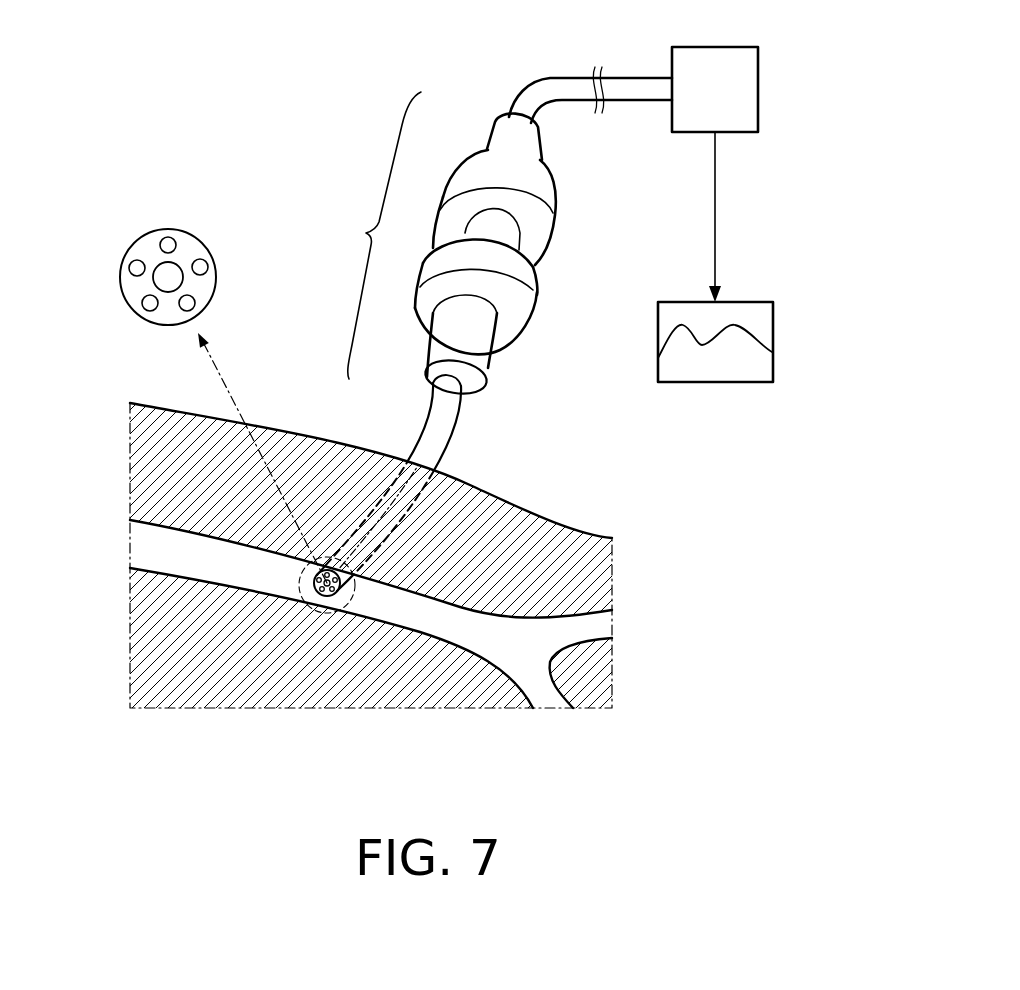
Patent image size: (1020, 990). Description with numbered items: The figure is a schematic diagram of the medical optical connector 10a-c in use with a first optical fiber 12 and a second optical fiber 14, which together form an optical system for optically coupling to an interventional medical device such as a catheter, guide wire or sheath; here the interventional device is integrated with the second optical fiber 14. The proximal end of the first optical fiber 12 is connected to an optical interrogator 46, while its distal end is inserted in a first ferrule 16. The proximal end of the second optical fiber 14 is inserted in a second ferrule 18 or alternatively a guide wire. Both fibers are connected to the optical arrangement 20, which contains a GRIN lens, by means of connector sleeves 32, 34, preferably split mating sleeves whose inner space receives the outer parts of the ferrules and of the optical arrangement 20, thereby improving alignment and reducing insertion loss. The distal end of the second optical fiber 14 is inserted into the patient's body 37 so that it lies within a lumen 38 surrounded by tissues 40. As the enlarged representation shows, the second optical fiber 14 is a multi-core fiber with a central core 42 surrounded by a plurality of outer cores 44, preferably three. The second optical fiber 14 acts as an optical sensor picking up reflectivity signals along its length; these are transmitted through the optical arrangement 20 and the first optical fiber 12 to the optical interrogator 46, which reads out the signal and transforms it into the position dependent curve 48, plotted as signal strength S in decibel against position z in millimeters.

The medical optical connector 10a-c is at (360, 235).
The first optical fiber 12 is at (567, 78).
The second optical fiber 14 is at (440, 430).
The first ferrule 16 is at (500, 125).
The second ferrule 18 is at (468, 363).
The optical arrangement 20 is at (480, 223).
The connector sleeve 32 is at (540, 202).
The connector sleeve 34 is at (520, 287).
The patient's body 37 is at (120, 462).
The lumen 38 is at (442, 632).
The tissues 40 is at (313, 680).
The central core 42 is at (160, 272).
The outer cores 44 is at (173, 242).
The optical interrogator 46 is at (736, 91).
The curve 48 is at (677, 350).